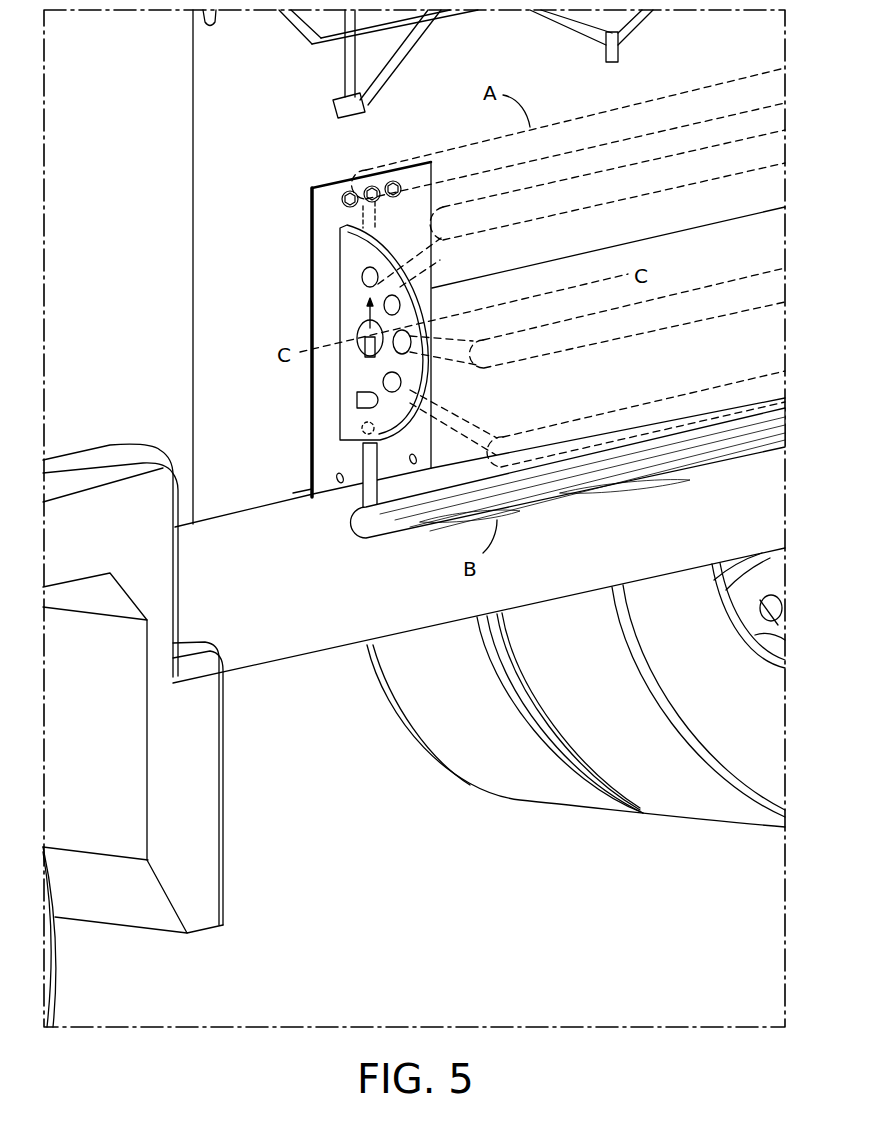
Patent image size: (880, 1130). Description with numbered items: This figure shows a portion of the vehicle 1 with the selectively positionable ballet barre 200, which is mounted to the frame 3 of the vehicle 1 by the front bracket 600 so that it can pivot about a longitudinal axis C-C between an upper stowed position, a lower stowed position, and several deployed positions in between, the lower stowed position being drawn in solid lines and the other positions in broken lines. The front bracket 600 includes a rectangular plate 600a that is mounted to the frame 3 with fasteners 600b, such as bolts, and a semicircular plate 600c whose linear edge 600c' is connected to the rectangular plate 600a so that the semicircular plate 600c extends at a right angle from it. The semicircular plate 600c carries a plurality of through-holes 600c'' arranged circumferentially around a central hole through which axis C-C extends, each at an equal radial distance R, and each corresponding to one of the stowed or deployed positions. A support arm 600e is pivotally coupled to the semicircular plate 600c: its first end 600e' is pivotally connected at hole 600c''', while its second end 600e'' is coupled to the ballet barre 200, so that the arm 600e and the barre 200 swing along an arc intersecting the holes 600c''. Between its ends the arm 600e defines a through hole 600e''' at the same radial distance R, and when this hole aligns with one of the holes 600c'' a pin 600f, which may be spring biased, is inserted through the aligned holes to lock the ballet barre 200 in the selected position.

The vehicle 1 is at (763, 56).
The frame 3 is at (335, 77).
The ballet barre 200 is at (382, 537).
The front bracket 600 is at (311, 234).
The rectangular plate 600a is at (330, 307).
The fasteners 600b is at (387, 187).
The semicircular plate 600c is at (298, 385).
The linear edge 600c' is at (298, 291).
The through-holes 600c'' is at (287, 237).
The hole 600c''' is at (285, 354).
The support arm 600e is at (254, 496).
The first end 600e' is at (303, 338).
The second end 600e'' is at (597, 417).
The through hole 600e''' is at (591, 334).
The pin 600f is at (358, 399).